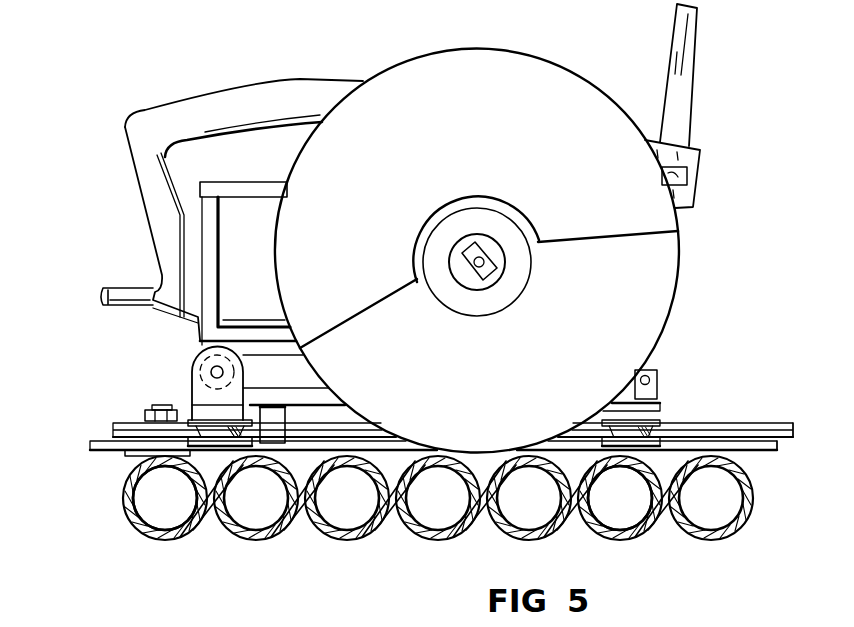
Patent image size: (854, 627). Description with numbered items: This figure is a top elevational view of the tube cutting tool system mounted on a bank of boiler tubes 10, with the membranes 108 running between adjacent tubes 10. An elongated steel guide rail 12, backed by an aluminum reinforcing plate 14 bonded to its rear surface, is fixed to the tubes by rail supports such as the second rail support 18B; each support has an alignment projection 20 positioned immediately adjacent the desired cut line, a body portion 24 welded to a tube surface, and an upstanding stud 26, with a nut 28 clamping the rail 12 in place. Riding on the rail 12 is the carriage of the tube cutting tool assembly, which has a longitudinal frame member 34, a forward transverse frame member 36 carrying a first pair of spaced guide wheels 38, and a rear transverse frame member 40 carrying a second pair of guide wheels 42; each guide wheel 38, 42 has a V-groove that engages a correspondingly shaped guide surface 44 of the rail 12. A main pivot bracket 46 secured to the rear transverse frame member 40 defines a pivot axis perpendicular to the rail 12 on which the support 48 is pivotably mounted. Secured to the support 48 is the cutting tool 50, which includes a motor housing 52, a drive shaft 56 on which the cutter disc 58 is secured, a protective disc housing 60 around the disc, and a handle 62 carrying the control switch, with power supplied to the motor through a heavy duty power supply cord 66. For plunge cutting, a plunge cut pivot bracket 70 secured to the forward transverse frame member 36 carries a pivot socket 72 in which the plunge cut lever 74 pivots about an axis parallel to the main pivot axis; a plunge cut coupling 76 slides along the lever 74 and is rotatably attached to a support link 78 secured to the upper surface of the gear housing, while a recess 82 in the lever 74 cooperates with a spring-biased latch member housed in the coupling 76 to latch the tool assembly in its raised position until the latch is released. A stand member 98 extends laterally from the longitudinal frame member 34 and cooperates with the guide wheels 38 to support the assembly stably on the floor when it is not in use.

The boiler tubes 10 is at (252, 541).
The guide rail 12 is at (113, 424).
The aluminum reinforcing plate 14 is at (92, 445).
The second rail support 18B is at (120, 456).
The alignment projection 20 is at (195, 467).
The body portion 24 is at (125, 459).
The stud 26 is at (166, 410).
The nut 28 is at (150, 412).
The longitudinal frame member 34 is at (278, 395).
The forward transverse frame member 36 is at (648, 413).
The guide wheel 38 is at (638, 442).
The rear transverse frame member 40 is at (208, 413).
The guide wheel 42 is at (228, 441).
The guide surface 44 is at (763, 429).
The main pivot bracket 46 is at (198, 373).
The support 48 is at (205, 346).
The cutting tool 50 is at (118, 222).
The motor housing 52 is at (248, 210).
The drive shaft 56 is at (485, 266).
The cutter disc 58 is at (537, 356).
The protective disc housing 60 is at (493, 108).
The handle 62 is at (235, 99).
The power supply cord 66 is at (122, 288).
The plunge cut pivot bracket 70 is at (652, 402).
The pivot socket 72 is at (658, 380).
The plunge cut lever 74 is at (690, 71).
The plunge cut coupling 76 is at (698, 150).
The support link 78 is at (687, 184).
The recess 82 is at (680, 50).
The stand member 98 is at (277, 436).
The membranes 108 is at (210, 514).